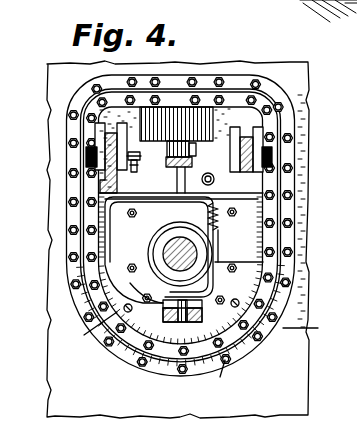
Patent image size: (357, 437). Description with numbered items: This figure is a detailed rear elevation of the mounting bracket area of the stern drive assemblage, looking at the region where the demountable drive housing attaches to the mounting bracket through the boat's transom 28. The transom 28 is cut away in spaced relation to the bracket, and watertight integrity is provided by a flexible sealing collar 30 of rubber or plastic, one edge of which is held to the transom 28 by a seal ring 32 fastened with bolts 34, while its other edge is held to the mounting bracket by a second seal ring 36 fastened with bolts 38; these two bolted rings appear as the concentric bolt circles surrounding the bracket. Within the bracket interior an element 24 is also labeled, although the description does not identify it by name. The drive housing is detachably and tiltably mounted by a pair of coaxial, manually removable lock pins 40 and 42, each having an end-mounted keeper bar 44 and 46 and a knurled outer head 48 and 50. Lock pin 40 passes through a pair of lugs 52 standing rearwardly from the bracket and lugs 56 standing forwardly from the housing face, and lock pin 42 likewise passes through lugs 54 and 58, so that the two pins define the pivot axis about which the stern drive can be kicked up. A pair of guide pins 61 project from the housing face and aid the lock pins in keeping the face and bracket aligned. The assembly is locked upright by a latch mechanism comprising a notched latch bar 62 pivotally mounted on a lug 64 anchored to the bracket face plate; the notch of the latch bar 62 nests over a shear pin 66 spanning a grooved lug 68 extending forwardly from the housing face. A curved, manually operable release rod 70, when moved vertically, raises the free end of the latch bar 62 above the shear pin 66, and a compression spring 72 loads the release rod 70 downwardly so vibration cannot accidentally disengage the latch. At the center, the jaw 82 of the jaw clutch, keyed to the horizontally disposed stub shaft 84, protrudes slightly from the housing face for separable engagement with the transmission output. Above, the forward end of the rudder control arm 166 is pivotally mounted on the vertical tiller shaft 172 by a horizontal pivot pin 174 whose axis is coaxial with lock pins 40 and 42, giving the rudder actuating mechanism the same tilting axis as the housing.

The base plate 24 is at (128, 215).
The transom 28 is at (295, 362).
The flexible sealing collar 30 is at (163, 355).
The seal ring 32 is at (123, 357).
The bolts 34 is at (70, 231).
The second seal ring 36 is at (225, 375).
The bolts 38 is at (87, 252).
The lock pin 40 is at (140, 162).
The lock pin 42 is at (192, 150).
The keeper bar 44 is at (137, 172).
The keeper bar 46 is at (214, 180).
The knurled outer head 48 is at (100, 157).
The knurled outer head 50 is at (295, 147).
The lugs 52 is at (118, 125).
The lugs 54 is at (238, 120).
The lugs 56 is at (100, 190).
The lugs 58 is at (273, 152).
The guide pins 61 is at (200, 328).
The notched latch bar 62 is at (172, 295).
The lug 64 is at (204, 310).
The shear pin 66 is at (222, 296).
The grooved lug 68 is at (131, 270).
The release rod 70 is at (263, 262).
The compression spring 72 is at (218, 222).
The jaw 82 is at (172, 232).
The stub shaft 84 is at (172, 252).
The control arm 166 is at (205, 162).
The tiller shaft 172 is at (190, 140).
The horizontal pivot pin 174 is at (167, 149).